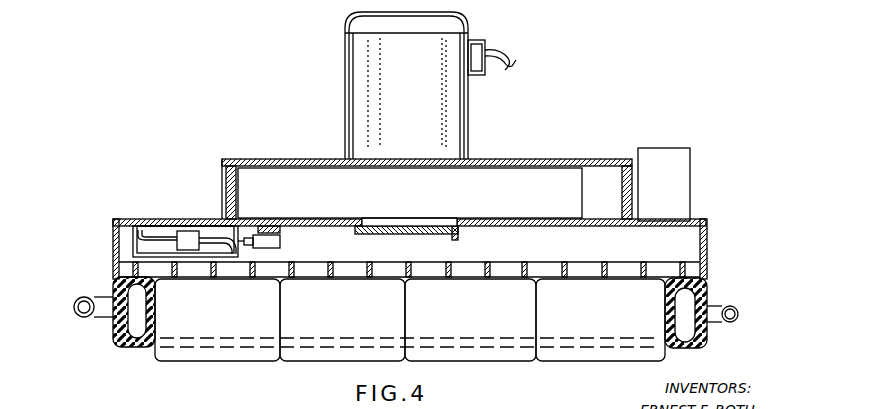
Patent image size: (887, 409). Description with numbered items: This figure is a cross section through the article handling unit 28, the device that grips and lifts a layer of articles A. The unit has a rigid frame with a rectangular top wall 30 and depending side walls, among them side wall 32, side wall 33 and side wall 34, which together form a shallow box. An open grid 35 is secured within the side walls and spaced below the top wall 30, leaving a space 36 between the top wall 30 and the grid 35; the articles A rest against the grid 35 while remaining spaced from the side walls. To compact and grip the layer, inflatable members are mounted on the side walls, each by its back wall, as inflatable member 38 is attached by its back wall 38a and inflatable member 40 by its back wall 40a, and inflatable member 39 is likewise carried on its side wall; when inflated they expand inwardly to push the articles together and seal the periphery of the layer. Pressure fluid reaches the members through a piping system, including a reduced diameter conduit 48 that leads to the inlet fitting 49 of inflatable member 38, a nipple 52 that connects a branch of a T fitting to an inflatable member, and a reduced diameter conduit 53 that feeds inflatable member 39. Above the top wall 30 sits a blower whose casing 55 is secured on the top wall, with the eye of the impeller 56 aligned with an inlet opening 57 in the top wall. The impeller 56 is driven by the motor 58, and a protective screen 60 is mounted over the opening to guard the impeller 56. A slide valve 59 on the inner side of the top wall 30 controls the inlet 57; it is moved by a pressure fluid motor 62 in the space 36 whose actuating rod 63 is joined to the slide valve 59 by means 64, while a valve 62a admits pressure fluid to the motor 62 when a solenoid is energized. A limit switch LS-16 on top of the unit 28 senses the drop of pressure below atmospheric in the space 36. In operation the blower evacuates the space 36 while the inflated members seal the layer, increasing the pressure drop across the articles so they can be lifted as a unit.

The article handling unit 28 is at (427, 152).
The top wall 30 is at (161, 233).
The side wall 32 is at (707, 258).
The side wall 33 is at (690, 238).
The side wall 34 is at (115, 222).
The grid 35 is at (540, 262).
The space 36 is at (518, 254).
The inflatable member 38 is at (665, 322).
The back wall 38a is at (705, 332).
The inflatable member 39 is at (500, 355).
The inflatable member 40 is at (135, 345).
The back wall 40a is at (112, 276).
The reduced diameter conduit 48 is at (740, 313).
The inlet fitting 49 is at (715, 303).
The nipple 52 is at (100, 322).
The reduced diameter conduit 53 is at (90, 303).
The blower casing 55 is at (484, 158).
The impeller 56 is at (550, 177).
The inlet opening 57 is at (430, 218).
The motor 58 is at (424, 86).
The slide valve 59 is at (361, 236).
The protective screen 60 is at (425, 234).
The pressure fluid motor 62 is at (145, 222).
The valve 62a is at (188, 230).
The actuating rod 63 is at (243, 240).
The connecting means 64 is at (288, 243).
The limit switch LS-16 is at (683, 175).